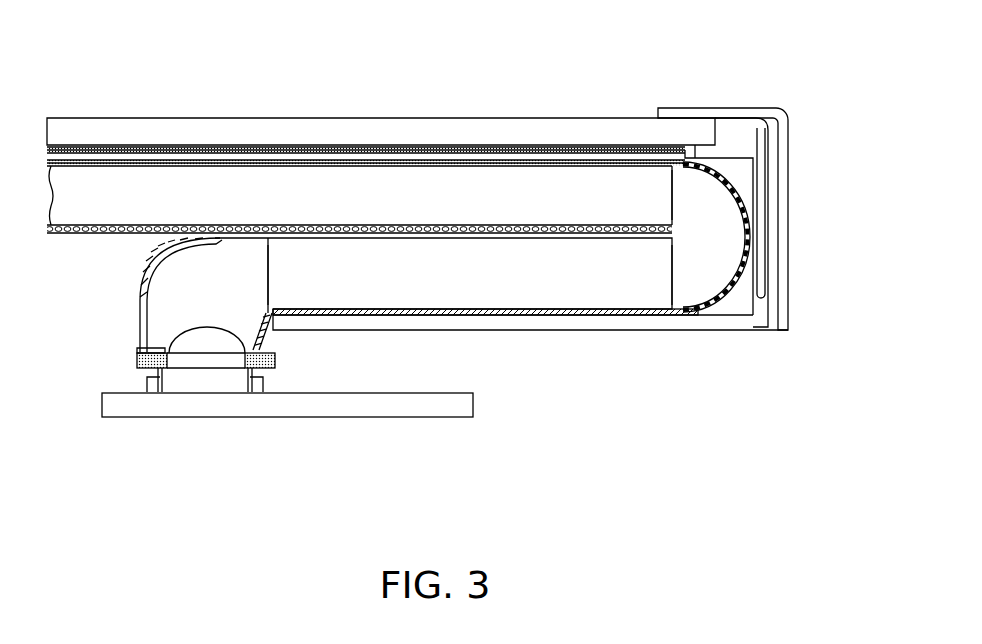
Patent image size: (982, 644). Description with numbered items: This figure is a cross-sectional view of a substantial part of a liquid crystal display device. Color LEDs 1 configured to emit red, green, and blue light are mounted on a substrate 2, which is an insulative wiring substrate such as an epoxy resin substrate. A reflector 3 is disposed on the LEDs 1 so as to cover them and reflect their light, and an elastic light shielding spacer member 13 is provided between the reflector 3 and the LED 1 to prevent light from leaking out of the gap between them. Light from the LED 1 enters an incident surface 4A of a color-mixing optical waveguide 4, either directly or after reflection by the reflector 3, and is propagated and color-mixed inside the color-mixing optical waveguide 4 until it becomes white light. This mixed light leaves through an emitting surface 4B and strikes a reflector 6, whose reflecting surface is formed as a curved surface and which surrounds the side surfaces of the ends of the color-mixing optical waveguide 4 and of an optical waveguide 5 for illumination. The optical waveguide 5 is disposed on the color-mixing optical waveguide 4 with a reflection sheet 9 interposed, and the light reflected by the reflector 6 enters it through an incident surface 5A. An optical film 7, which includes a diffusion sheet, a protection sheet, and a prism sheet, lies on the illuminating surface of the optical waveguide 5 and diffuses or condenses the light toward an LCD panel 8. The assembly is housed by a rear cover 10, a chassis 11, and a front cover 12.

The LED 1 is at (202, 383).
The substrate 2 is at (367, 402).
The reflector 3 is at (140, 340).
The color-mixing optical waveguide 4 is at (500, 293).
The incident surface 4A is at (257, 273).
The emitting surface 4B is at (678, 290).
The optical waveguide 5 is at (395, 188).
The incident surface 5A is at (676, 202).
The reflector 6 is at (733, 287).
The optical film 7 is at (202, 155).
The LCD panel 8 is at (297, 130).
The reflection sheet 9 is at (553, 233).
The rear cover 10 is at (642, 323).
The chassis 11 is at (777, 268).
The front cover 12 is at (783, 133).
The light shielding spacer member 13 is at (135, 362).